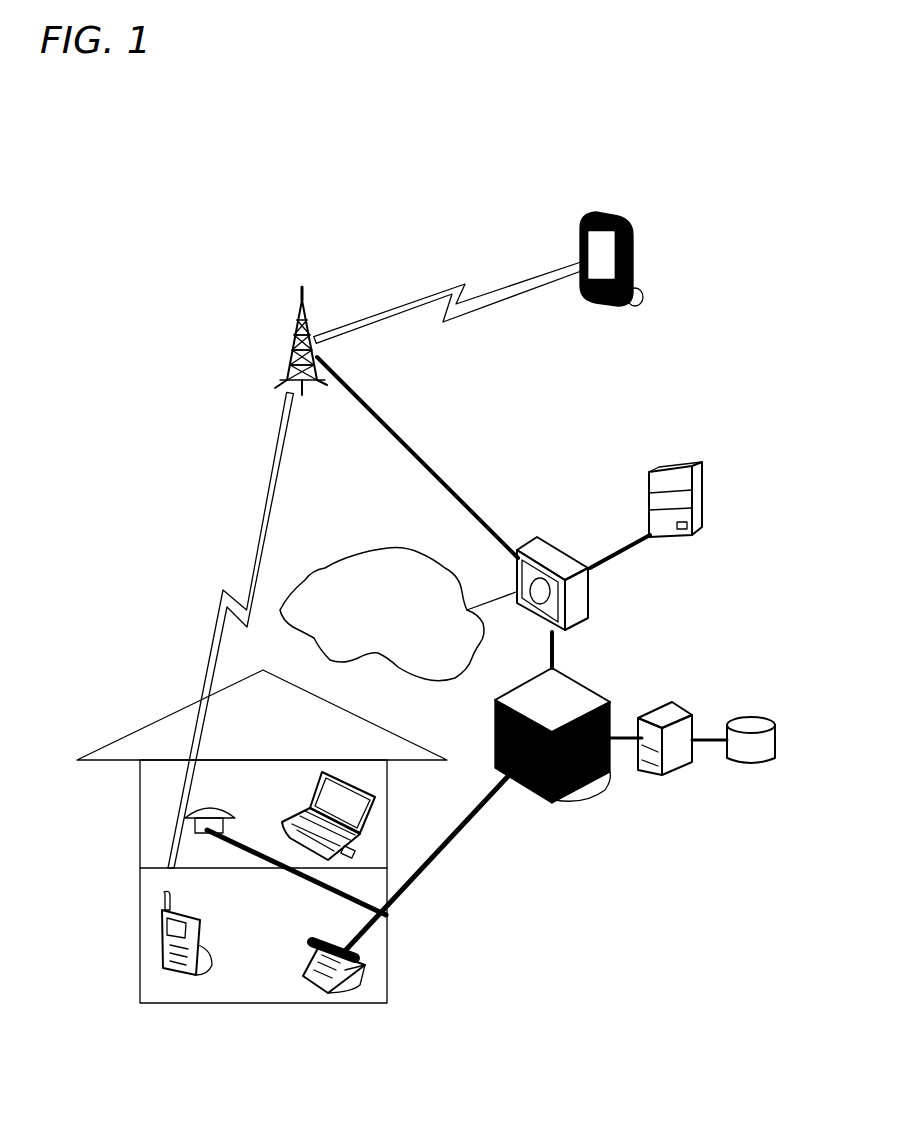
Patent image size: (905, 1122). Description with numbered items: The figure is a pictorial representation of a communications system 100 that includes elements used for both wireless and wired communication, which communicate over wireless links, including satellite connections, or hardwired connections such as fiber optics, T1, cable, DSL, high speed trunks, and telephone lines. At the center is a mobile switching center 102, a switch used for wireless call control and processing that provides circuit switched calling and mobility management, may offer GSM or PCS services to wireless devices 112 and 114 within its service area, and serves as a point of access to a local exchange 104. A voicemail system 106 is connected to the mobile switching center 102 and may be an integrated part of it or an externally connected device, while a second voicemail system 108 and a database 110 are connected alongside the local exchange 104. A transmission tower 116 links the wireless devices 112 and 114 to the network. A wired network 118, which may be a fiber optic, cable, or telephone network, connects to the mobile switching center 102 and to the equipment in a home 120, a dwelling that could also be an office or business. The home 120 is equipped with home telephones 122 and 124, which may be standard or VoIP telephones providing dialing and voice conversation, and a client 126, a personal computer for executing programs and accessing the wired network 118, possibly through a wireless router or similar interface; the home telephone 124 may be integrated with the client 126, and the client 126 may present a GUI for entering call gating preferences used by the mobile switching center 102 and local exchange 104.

The communications system 100 is at (143, 219).
The mobile switching center 102 is at (537, 537).
The local exchange 104 is at (555, 800).
The voicemail system 106 is at (666, 472).
The voicemail system 108 is at (683, 763).
The database 110 is at (733, 720).
The wireless device 112 is at (628, 232).
The wireless device 114 is at (162, 965).
The transmission tower 116 is at (290, 373).
The wired network 118 is at (345, 773).
The home 120 is at (142, 727).
The home telephone 122 is at (370, 975).
The home telephone 124 is at (207, 830).
The client 126 is at (377, 827).